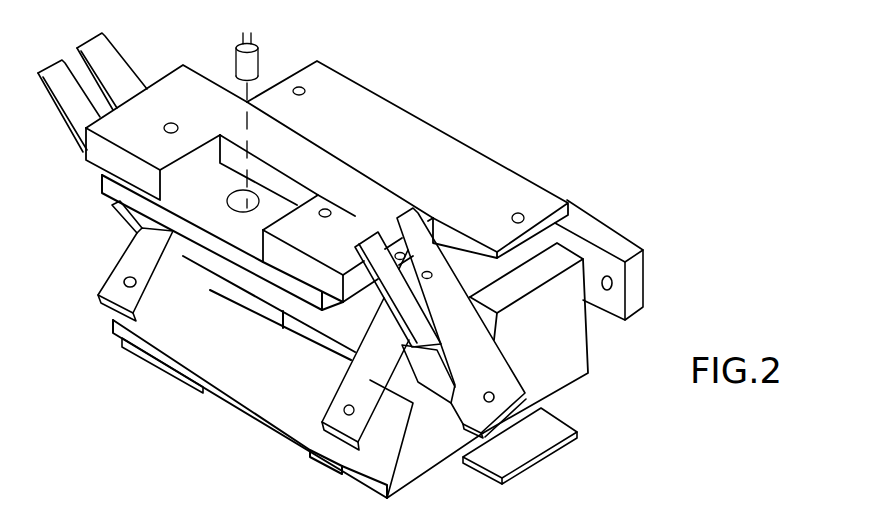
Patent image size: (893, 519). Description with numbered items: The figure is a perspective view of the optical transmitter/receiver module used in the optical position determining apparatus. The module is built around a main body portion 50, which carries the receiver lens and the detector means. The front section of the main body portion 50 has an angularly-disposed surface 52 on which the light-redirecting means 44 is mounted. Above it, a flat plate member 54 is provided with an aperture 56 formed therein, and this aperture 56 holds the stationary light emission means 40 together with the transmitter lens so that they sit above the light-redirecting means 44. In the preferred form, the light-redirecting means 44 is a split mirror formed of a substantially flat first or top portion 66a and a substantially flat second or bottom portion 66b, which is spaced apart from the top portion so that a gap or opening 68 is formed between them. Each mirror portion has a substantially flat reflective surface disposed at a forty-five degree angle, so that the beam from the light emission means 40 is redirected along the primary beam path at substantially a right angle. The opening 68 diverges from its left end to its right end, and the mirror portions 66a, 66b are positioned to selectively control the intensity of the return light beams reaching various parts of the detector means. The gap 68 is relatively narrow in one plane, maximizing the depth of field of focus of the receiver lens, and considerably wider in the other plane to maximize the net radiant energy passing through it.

The light emission means 40 is at (258, 58).
The light-redirecting means 44 is at (343, 468).
The main body portion 50 is at (572, 389).
The angularly-disposed surface 52 is at (410, 437).
The flat plate member 54 is at (375, 216).
The aperture 56 is at (243, 213).
The first or top portion 66a is at (362, 330).
The second or bottom portion 66b is at (303, 398).
The gap or opening 68 is at (273, 312).